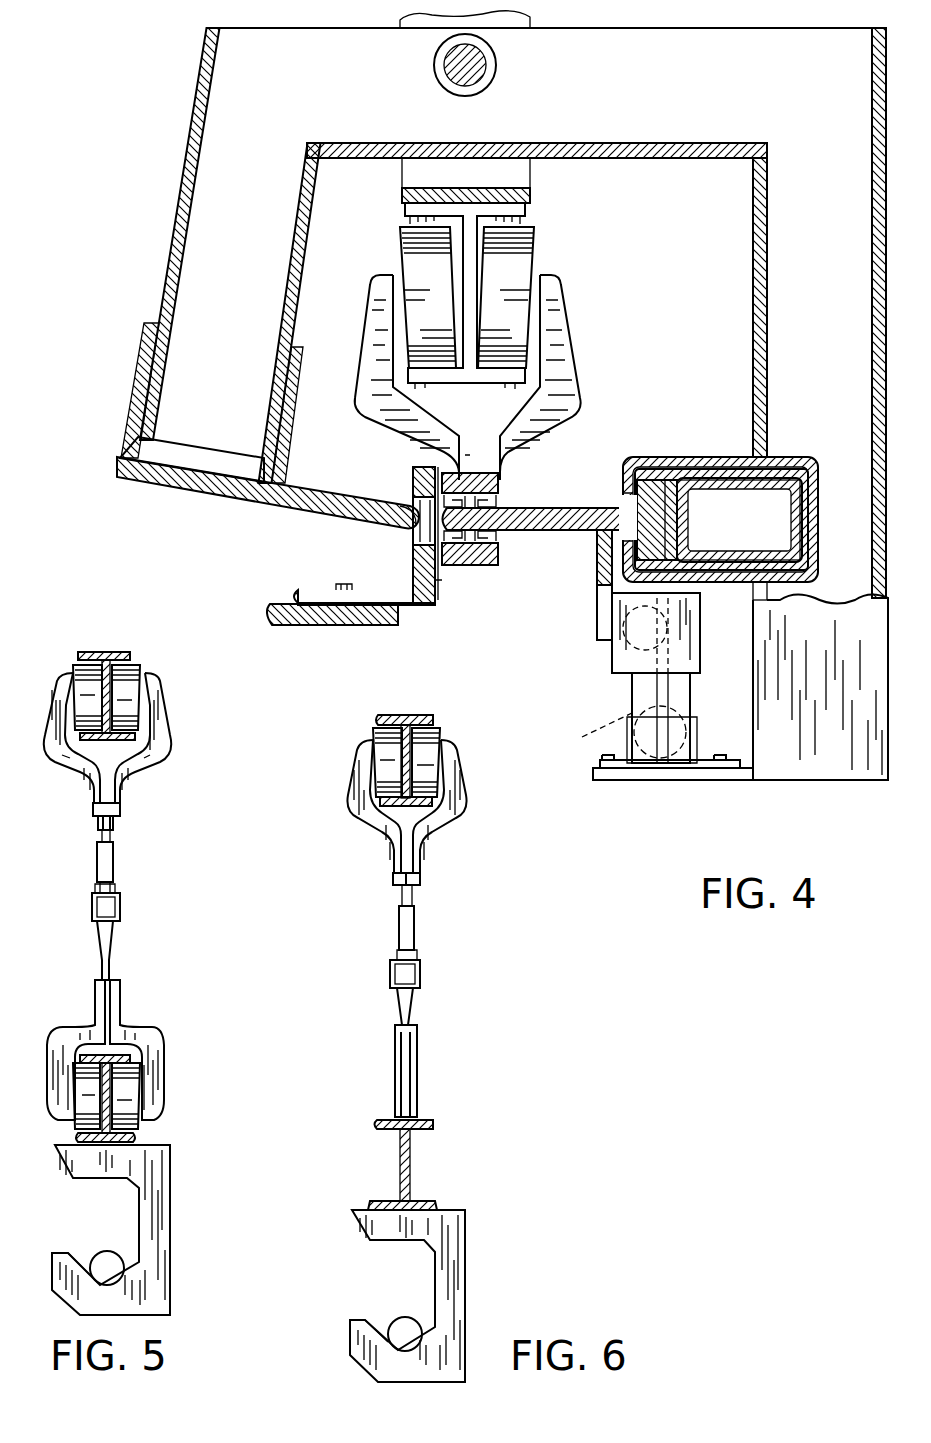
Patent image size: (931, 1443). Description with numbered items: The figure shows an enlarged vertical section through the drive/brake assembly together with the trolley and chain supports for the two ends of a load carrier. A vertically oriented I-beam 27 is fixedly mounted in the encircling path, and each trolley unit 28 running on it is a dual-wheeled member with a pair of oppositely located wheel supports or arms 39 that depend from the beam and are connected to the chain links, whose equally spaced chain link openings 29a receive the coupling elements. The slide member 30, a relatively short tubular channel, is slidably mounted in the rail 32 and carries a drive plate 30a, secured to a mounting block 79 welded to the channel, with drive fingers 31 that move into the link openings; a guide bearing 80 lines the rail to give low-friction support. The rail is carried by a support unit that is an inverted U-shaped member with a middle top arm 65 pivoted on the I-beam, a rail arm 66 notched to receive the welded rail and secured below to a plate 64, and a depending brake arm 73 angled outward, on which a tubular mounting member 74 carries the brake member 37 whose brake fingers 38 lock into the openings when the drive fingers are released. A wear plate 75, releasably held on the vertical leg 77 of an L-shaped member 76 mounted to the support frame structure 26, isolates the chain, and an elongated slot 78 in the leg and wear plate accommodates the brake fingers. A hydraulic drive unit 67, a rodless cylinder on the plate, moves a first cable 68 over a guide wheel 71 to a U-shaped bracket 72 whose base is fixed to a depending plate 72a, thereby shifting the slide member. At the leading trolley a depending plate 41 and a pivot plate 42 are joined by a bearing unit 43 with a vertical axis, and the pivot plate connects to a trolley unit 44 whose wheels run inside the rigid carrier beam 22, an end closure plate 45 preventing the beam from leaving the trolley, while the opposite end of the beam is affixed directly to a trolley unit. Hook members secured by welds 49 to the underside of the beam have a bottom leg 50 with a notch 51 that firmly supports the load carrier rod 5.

In FIG. 5, the load carrier rod 5 is at (107, 1252).
In FIG. 6, the load carrier rod 5 is at (407, 1332).
In FIG. 5, the carrier beam 22 is at (137, 1137).
In FIG. 6, the carrier beam 22 is at (402, 1165).
In FIG. 4, the support frame structure 26 is at (535, 177).
In FIG. 4, the I-beam 27 is at (530, 208).
In FIG. 5, the I-beam 27 is at (106, 696).
In FIG. 6, the I-beam 27 is at (404, 760).
In FIG. 4, the trolley unit 28 is at (449, 414).
In FIG. 5, the trolley unit 28 is at (124, 737).
In FIG. 6, the trolley unit 28 is at (422, 798).
In FIG. 4, the chain link openings 29a is at (497, 538).
In FIG. 4, the slide member 30 is at (768, 483).
In FIG. 4, the drive plate 30a is at (588, 508).
In FIG. 4, the drive fingers 31 is at (500, 515).
In FIG. 4, the rail 32 is at (716, 457).
In FIG. 4, the brake member 37 is at (268, 510).
In FIG. 4, the brake fingers 38 is at (393, 516).
In FIG. 4, the wheel supports or arms 39 is at (560, 362).
In FIG. 5, the wheel supports or arms 39 is at (130, 768).
In FIG. 6, the wheel supports or arms 39 is at (425, 848).
In FIG. 5, the depending plate 41 is at (112, 854).
In FIG. 6, the depending plate 41 is at (407, 922).
In FIG. 5, the pivot plate 42 is at (115, 944).
In FIG. 6, the pivot plate 42 is at (406, 1052).
In FIG. 5, the bearing unit 43 is at (122, 901).
In FIG. 6, the bearing unit 43 is at (405, 974).
In FIG. 5, the trolley unit 44 is at (142, 1061).
In FIG. 5, the end closure plate 45 is at (127, 1117).
In FIG. 5, the welds 49 is at (133, 1228).
In FIG. 6, the welds 49 is at (396, 1258).
In FIG. 5, the bottom leg 50 is at (140, 1283).
In FIG. 6, the bottom leg 50 is at (365, 1348).
In FIG. 5, the notch 51 is at (80, 1255).
In FIG. 6, the notch 51 is at (370, 1322).
In FIG. 4, the plate 64 is at (840, 780).
In FIG. 4, the top arm 65 is at (648, 89).
In FIG. 4, the rail arm 66 is at (848, 279).
In FIG. 4, the hydraulic drive unit 67 is at (590, 730).
In FIG. 4, the first cable 68 is at (614, 624).
In FIG. 4, the guide wheel 71 is at (638, 687).
In FIG. 4, the bracket 72 is at (618, 659).
In FIG. 4, the depending plate 72a is at (597, 573).
In FIG. 4, the brake arm 73 is at (253, 255).
In FIG. 4, the tubular mounting member 74 is at (293, 430).
In FIG. 4, the wear plate 75 is at (438, 578).
In FIG. 4, the L-shaped member 76 is at (409, 608).
In FIG. 4, the vertical leg 77 is at (418, 567).
In FIG. 4, the elongated slot 78 is at (413, 493).
In FIG. 4, the mounting block 79 is at (660, 537).
In FIG. 4, the guide bearing 80 is at (728, 495).